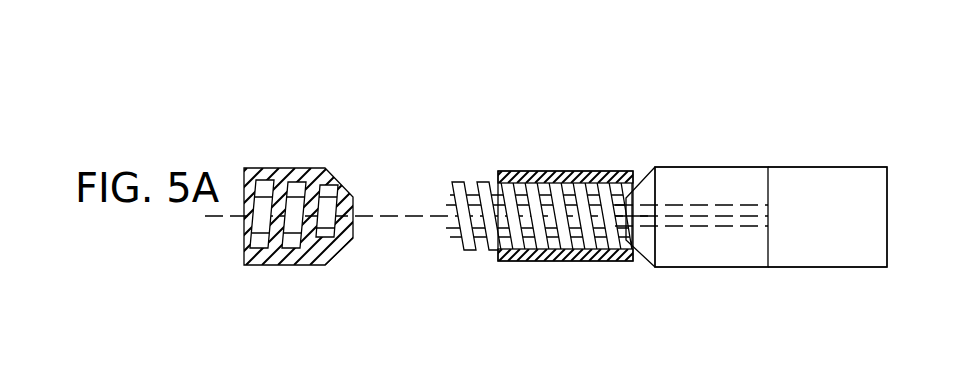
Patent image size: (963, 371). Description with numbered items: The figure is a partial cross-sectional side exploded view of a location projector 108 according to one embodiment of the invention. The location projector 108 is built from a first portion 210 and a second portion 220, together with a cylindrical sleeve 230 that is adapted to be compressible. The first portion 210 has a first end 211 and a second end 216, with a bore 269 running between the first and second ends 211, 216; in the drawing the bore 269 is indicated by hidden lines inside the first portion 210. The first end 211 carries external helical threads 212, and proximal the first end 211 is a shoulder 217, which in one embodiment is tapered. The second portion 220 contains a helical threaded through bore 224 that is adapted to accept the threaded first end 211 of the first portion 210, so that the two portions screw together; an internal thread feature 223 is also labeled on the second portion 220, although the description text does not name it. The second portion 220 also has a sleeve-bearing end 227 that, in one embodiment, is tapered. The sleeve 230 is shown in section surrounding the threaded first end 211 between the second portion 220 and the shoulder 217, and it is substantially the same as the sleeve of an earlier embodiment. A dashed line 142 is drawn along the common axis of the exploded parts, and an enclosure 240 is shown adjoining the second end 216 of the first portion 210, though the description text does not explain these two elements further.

The location projector 108 is at (617, 113).
The axis 142 is at (421, 172).
The first portion 210 is at (747, 220).
The first end 211 is at (450, 226).
The external helical threads 212 is at (517, 251).
The second end 216 is at (755, 268).
The shoulder 217 is at (645, 264).
The second portion 220 is at (286, 208).
The internal thread 223 is at (297, 188).
The helical threaded through bore 224 is at (326, 186).
The sleeve-bearing end 227 is at (333, 255).
The cylindrical sleeve 230 is at (570, 171).
The motor 240 is at (837, 178).
The bore 269 is at (688, 226).